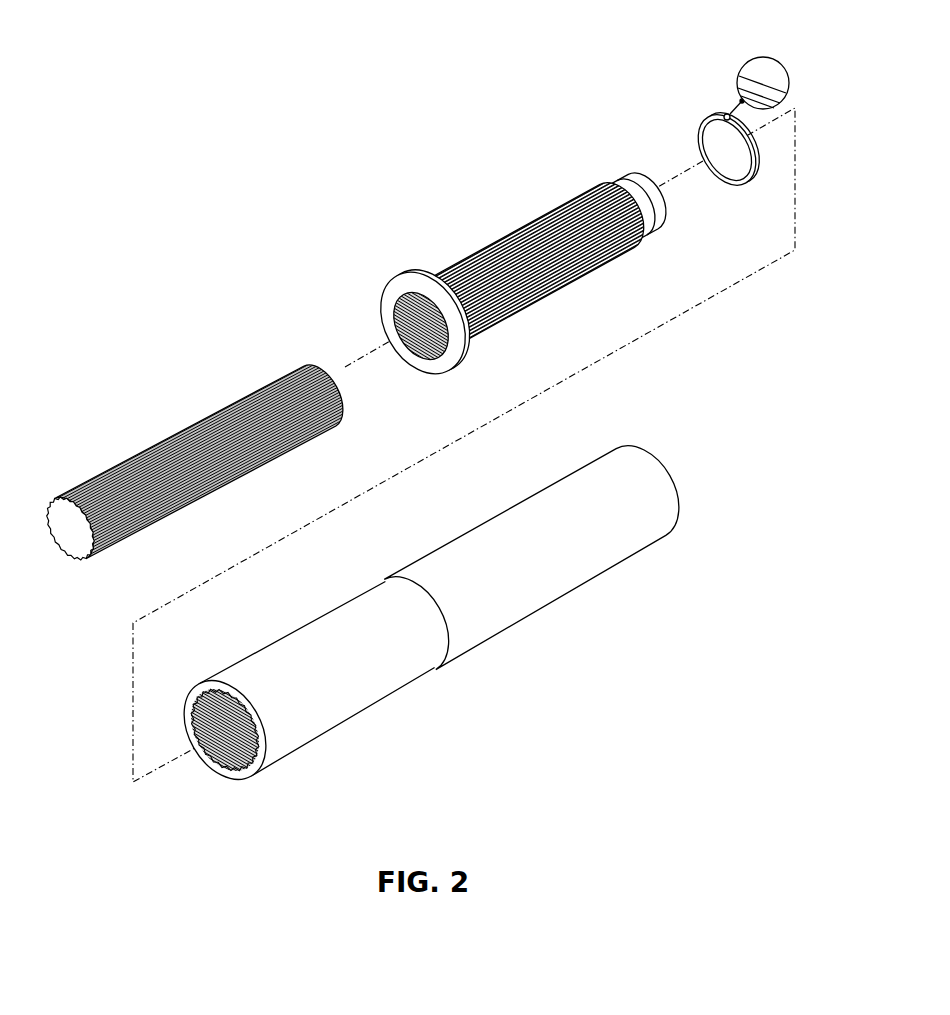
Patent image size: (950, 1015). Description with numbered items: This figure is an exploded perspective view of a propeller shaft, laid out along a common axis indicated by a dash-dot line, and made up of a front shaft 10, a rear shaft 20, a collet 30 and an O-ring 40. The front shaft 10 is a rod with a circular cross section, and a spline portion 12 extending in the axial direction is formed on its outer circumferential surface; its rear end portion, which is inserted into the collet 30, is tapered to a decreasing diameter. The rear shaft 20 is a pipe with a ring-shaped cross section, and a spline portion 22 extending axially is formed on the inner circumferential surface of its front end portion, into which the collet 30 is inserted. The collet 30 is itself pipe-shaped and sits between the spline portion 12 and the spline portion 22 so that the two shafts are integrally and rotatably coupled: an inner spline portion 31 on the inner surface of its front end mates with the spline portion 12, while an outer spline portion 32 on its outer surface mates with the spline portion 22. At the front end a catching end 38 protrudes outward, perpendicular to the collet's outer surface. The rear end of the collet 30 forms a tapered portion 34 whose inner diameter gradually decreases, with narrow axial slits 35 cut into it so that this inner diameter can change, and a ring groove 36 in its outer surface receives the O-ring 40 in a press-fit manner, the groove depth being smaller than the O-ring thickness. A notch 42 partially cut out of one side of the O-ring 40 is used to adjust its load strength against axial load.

The front shaft 10 is at (195, 439).
The spline portion 12 is at (237, 378).
The rear shaft 20 is at (422, 631).
The spline portion 22 is at (214, 765).
The collet 30 is at (491, 243).
The inner spline portion 31 is at (398, 312).
The outer spline portion 32 is at (448, 262).
The tapered portion 34 is at (640, 186).
The slits 35 is at (628, 171).
The ring groove 36 is at (610, 179).
The catching end 38 is at (390, 278).
The O-ring 40 is at (723, 106).
The notch 42 is at (761, 86).